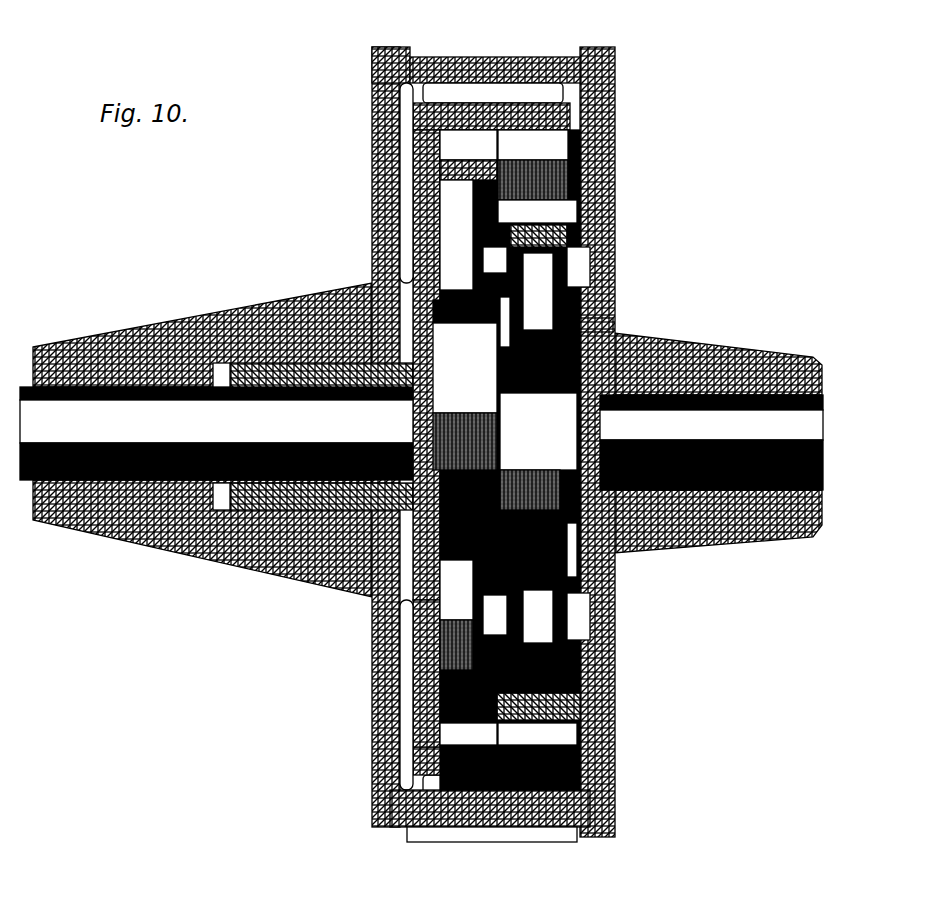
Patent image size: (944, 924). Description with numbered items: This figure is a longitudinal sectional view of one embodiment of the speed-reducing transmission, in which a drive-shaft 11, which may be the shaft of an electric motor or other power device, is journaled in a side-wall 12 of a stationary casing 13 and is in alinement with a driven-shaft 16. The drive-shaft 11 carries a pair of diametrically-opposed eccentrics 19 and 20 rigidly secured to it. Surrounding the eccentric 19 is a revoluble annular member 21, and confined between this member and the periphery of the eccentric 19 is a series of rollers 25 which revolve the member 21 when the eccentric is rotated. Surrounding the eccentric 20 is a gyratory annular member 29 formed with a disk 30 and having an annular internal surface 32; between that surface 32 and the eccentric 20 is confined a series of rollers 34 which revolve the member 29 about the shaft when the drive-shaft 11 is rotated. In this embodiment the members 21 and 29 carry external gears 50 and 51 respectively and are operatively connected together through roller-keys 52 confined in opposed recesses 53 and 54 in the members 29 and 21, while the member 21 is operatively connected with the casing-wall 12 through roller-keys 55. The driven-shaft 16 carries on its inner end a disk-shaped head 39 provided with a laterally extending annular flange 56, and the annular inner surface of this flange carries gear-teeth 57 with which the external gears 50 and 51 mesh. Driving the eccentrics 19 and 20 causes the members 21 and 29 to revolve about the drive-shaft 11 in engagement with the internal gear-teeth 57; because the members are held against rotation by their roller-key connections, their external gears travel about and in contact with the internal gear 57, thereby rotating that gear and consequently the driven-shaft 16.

The drive-shaft 11 is at (711, 442).
The side-wall 12 is at (612, 272).
The stationary casing 13 is at (555, 62).
The driven-shaft 16 is at (225, 433).
The eccentric 19 is at (538, 451).
The eccentric 20 is at (465, 396).
The revoluble annular member 21 is at (585, 240).
The rollers 25 is at (625, 657).
The gyratory annular member 29 is at (322, 692).
The disk 30 is at (455, 175).
The annular internal surface 32 is at (466, 322).
The rollers 34 is at (420, 245).
The disk-shaped head 39 is at (452, 215).
The external gear 50 is at (548, 213).
The external gear 51 is at (460, 145).
The roller-keys 52 is at (445, 657).
The recesses 53 is at (450, 235).
The recesses 54 is at (612, 328).
The roller-keys 55 is at (590, 265).
The annular flange 56 is at (466, 108).
The gear-teeth 57 is at (548, 143).